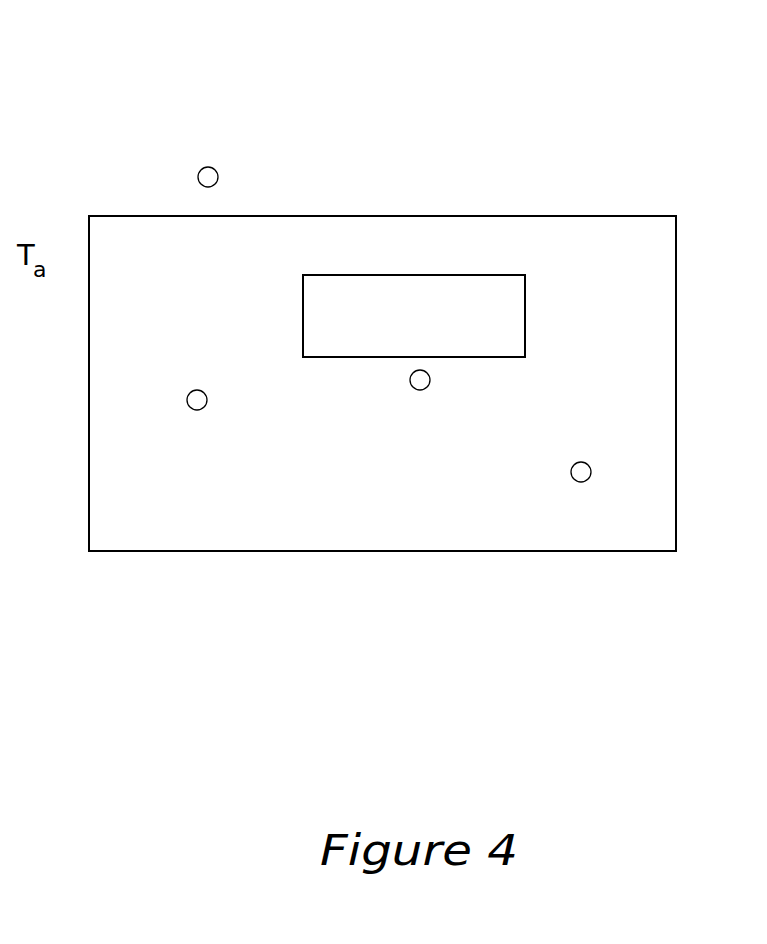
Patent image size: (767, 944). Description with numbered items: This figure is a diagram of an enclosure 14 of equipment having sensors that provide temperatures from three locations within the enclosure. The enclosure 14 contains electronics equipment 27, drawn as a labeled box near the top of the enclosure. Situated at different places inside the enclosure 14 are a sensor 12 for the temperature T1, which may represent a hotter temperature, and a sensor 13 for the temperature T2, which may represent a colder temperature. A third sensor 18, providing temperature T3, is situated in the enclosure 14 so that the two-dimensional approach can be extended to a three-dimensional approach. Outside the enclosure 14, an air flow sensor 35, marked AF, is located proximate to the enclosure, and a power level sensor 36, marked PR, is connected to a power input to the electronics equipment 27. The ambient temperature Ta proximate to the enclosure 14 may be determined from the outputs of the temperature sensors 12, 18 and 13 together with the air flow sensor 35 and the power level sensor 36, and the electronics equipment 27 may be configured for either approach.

The enclosure 14 is at (630, 216).
The air flow sensor 35 is at (208, 167).
The power level sensor 36 is at (371, 275).
The electronics equipment 27 is at (303, 287).
The third sensor 18 is at (410, 380).
The sensor 12 is at (192, 390).
The sensor 13 is at (574, 462).